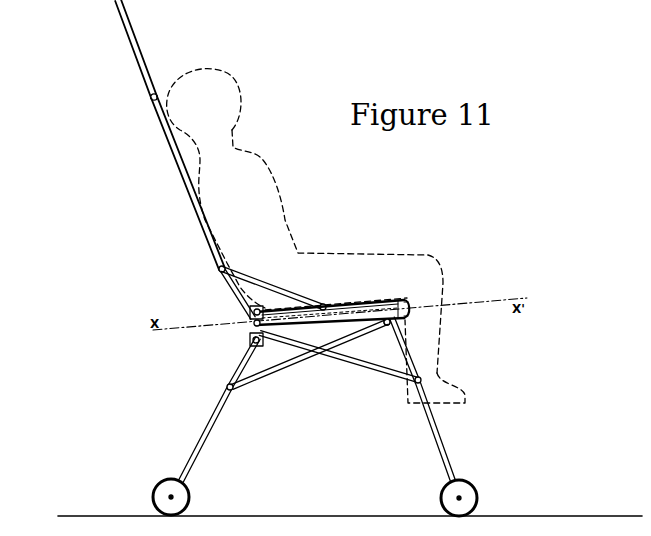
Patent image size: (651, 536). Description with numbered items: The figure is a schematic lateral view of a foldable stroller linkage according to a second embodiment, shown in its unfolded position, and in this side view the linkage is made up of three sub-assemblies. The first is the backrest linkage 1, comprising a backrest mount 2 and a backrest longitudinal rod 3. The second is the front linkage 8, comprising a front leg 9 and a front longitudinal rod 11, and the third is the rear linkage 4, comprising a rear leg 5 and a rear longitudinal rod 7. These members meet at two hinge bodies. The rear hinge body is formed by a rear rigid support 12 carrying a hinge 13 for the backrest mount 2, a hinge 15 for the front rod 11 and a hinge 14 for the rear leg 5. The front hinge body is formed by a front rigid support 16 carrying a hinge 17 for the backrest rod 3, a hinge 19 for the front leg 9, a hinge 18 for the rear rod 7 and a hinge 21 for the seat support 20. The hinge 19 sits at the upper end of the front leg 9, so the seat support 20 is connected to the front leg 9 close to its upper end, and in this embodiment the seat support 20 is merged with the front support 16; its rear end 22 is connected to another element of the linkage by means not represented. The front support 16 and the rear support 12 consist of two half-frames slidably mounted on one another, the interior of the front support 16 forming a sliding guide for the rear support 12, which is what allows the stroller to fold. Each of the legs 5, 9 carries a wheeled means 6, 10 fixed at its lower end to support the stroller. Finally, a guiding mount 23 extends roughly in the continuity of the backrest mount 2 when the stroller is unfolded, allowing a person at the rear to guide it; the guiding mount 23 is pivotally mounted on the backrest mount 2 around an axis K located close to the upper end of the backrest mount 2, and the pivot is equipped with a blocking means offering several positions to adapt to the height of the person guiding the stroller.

The backrest linkage 1 is at (237, 192).
The backrest mount 2 is at (198, 212).
The backrest longitudinal rod 3 is at (260, 284).
The rear linkage 4 is at (193, 398).
The rear leg 5 is at (206, 424).
The wheeled means 6 is at (154, 490).
The rear longitudinal rod 7 is at (258, 376).
The front linkage 8 is at (440, 375).
The front leg 9 is at (421, 418).
The wheeled means 10 is at (478, 491).
The front longitudinal rod 11 is at (350, 364).
The rear rigid support 12 is at (266, 306).
The hinge 13 is at (246, 298).
The hinge 14 is at (250, 340).
The hinge 15 is at (250, 312).
The front rigid support 16 is at (410, 307).
The hinge 17 is at (346, 304).
The hinge 18 is at (412, 303).
The hinge 19 is at (412, 320).
The seat support 20 is at (377, 303).
The hinge 21 is at (387, 322).
The rear end 22 is at (323, 305).
The guiding mount 23 is at (116, 2).
The axis K is at (150, 97).